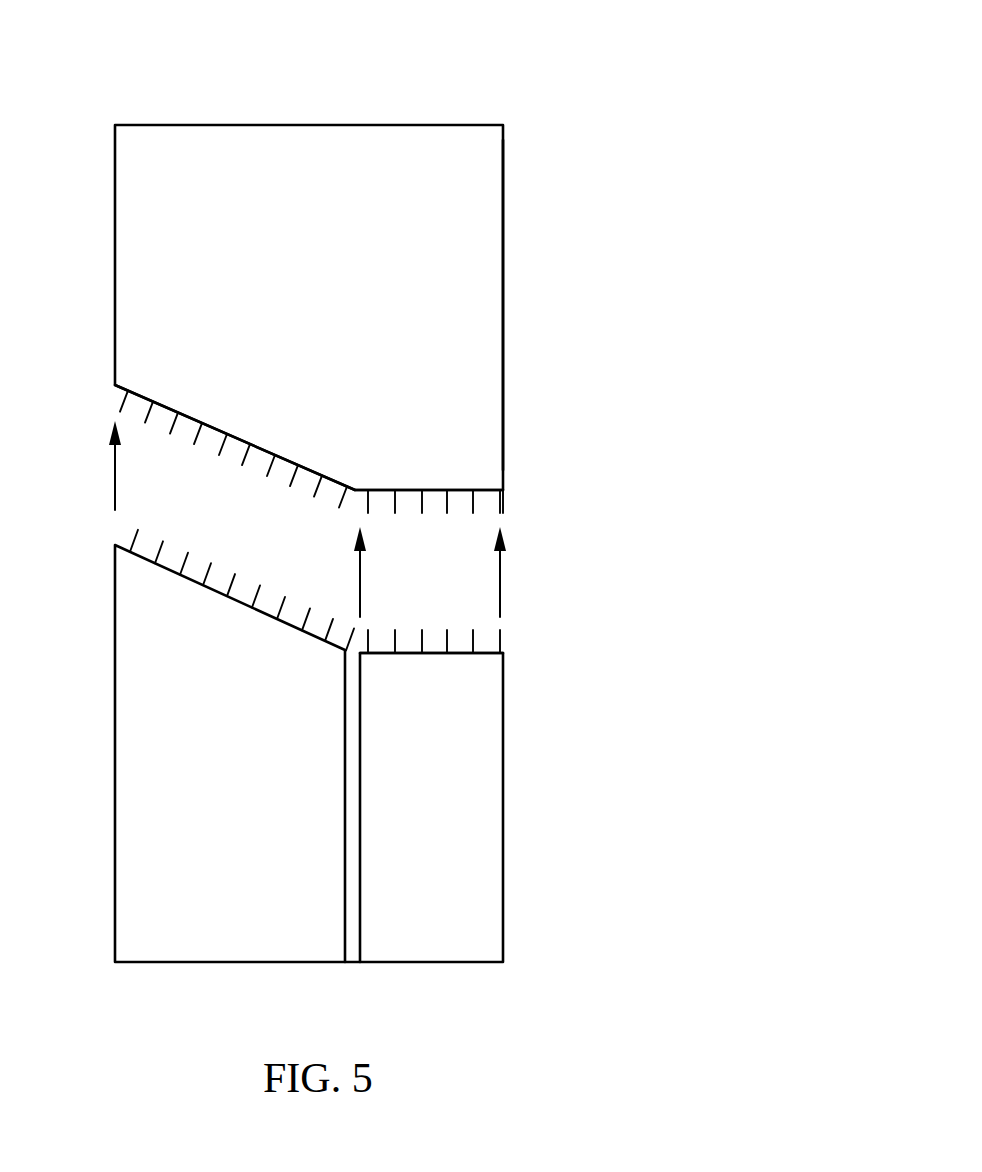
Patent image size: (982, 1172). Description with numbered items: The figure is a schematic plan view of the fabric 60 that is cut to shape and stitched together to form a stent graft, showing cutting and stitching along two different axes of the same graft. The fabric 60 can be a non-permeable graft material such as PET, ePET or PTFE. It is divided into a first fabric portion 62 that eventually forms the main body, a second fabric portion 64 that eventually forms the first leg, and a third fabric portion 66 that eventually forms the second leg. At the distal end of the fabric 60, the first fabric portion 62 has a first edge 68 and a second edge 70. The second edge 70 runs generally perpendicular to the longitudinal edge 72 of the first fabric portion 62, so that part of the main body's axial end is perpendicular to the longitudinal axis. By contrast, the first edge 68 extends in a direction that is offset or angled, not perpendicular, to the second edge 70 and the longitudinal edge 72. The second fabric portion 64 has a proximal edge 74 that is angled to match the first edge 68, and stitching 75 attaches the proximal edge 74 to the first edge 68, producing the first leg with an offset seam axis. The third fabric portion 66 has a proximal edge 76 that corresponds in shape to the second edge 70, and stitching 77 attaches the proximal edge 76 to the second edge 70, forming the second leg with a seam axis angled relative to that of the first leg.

The fabric 60 is at (583, 49).
The first fabric portion 62 is at (487, 303).
The second fabric portion 64 is at (137, 752).
The third fabric portion 66 is at (493, 798).
The first edge 68 is at (188, 417).
The second edge 70 is at (433, 490).
The longitudinal edge 72 is at (503, 220).
The proximal edge 74 is at (207, 590).
The stitching 75 is at (245, 457).
The proximal edge 76 is at (431, 654).
The stitching 77 is at (504, 500).